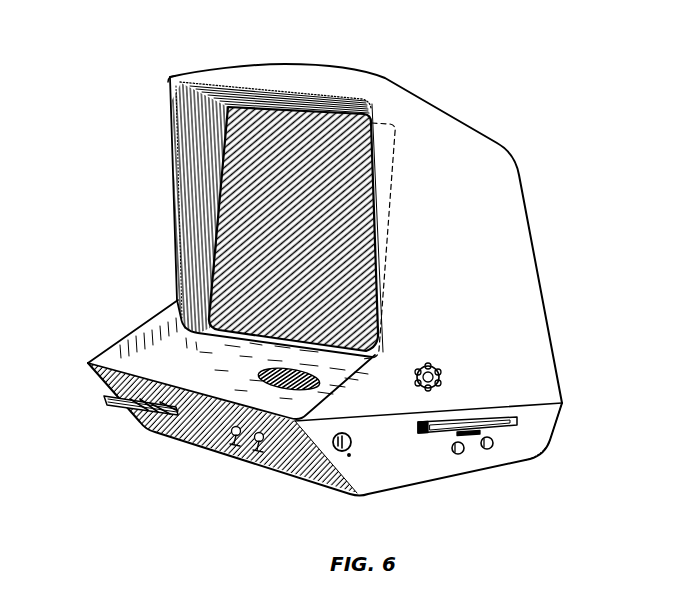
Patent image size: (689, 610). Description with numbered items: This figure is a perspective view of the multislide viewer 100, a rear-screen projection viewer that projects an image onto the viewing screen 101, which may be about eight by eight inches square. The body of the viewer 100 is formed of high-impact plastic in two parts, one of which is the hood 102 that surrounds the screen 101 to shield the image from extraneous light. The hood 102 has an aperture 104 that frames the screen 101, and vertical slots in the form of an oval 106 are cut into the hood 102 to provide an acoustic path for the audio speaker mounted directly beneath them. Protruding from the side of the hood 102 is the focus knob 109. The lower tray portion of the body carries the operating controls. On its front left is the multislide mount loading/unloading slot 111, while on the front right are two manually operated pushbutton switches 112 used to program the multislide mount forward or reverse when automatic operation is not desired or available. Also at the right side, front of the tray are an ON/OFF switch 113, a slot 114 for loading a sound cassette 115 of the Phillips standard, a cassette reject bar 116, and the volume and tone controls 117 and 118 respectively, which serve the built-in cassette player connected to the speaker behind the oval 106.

The multislide viewer 100 is at (527, 176).
The viewing screen 101 is at (235, 290).
The hood 102 is at (197, 240).
The aperture 104 is at (228, 153).
The oval 106 is at (258, 373).
The focus knob 109 is at (440, 375).
The multislide mount loading/unloading slot 111 is at (173, 437).
The pushbutton switches 112 is at (235, 446).
The ON/OFF switch 113 is at (338, 452).
The slot 114 is at (418, 427).
The sound cassette 115 is at (508, 428).
The cassette reject bar 116 is at (470, 436).
The volume control 117 is at (452, 449).
The tone control 118 is at (493, 446).